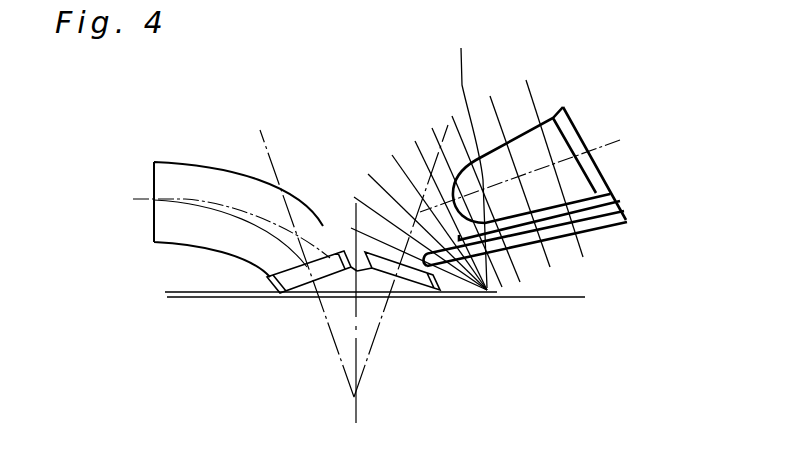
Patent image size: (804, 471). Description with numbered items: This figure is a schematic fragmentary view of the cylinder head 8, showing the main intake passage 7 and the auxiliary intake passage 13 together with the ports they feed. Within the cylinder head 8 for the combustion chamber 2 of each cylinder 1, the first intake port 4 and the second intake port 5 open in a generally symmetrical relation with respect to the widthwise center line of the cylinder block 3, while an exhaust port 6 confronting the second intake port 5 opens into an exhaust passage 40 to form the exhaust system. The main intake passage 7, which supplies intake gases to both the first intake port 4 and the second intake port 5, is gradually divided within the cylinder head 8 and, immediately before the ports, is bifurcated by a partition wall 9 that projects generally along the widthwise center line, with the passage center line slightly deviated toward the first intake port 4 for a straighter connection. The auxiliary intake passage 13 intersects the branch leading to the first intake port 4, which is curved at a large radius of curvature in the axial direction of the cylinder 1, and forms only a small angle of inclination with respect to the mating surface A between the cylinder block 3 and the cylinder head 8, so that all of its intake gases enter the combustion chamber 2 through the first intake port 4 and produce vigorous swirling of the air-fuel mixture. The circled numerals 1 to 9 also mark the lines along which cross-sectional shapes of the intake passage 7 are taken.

The exhaust passage 40 is at (195, 178).
The exhaust port 6 is at (320, 298).
The first intake port 4 is at (415, 277).
The main intake passage 7 is at (562, 150).
The auxiliary intake passage 13 is at (592, 222).
The cylinder 1 is at (547, 157).
The combustion chamber 2 is at (512, 170).
The cylinder block 3 is at (478, 188).
The second intake port 5 is at (443, 204).
The cylinder head 8 is at (409, 236).
The partition wall 9 is at (408, 154).
The mating surface A is at (410, 295).